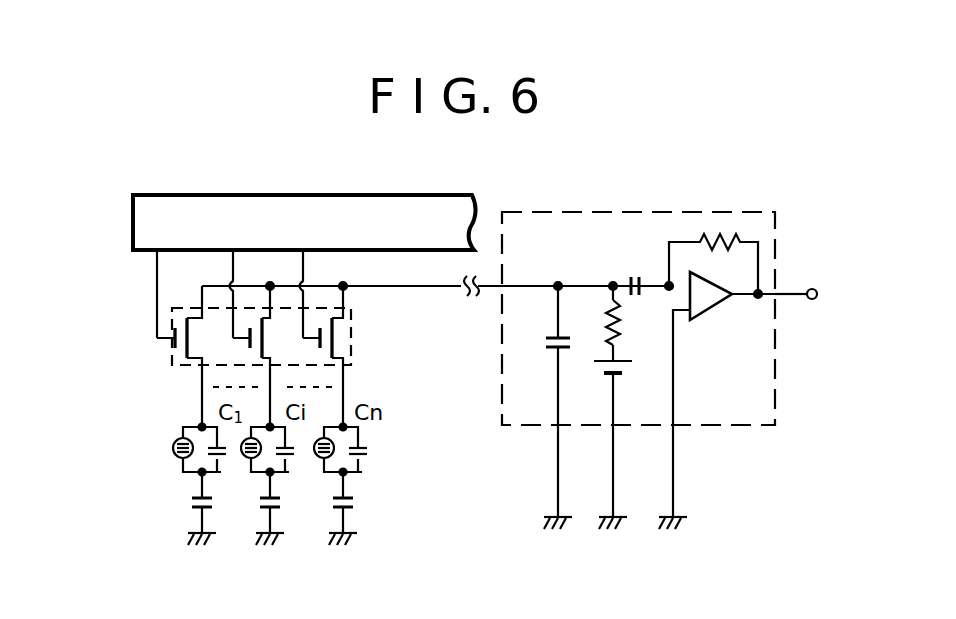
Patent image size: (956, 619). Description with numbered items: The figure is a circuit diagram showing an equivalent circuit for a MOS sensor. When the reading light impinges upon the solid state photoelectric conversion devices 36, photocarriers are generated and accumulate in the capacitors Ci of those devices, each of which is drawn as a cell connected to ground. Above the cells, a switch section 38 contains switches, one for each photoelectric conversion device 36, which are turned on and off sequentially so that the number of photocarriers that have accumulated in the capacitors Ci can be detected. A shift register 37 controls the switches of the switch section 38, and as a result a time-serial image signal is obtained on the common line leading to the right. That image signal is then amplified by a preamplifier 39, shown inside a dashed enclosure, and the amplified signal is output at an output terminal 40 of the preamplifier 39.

The solid state photoelectric conversion device 36 is at (175, 490).
The shift register 37 is at (141, 251).
The switch section 38 is at (172, 355).
The preamplifier 39 is at (723, 425).
The output terminal 40 is at (818, 292).